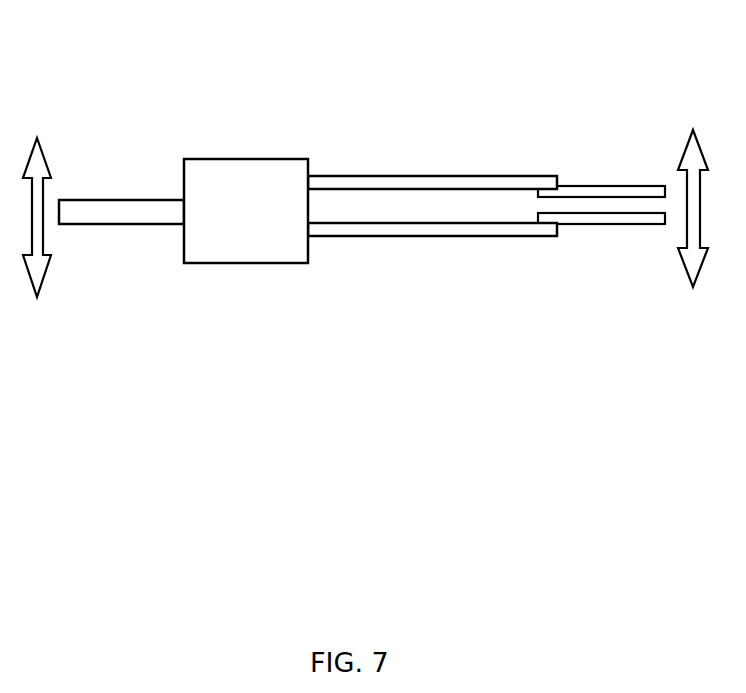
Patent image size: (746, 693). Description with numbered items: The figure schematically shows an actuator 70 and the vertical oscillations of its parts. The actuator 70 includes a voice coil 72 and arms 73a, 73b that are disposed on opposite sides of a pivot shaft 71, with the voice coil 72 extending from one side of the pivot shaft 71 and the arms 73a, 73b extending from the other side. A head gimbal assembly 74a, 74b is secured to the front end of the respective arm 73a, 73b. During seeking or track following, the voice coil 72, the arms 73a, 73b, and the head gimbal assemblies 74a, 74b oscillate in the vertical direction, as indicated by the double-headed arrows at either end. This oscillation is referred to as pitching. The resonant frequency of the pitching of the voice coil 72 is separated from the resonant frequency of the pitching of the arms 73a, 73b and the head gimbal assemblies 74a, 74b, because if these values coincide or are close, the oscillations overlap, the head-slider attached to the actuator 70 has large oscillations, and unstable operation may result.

The actuator 70 is at (222, 100).
The pivot shaft 71 is at (267, 263).
The voice coil 72 is at (130, 224).
The arm 73a is at (443, 176).
The arm 73b is at (492, 236).
The head gimbal assembly 74a is at (618, 186).
The head gimbal assembly 74b is at (632, 224).